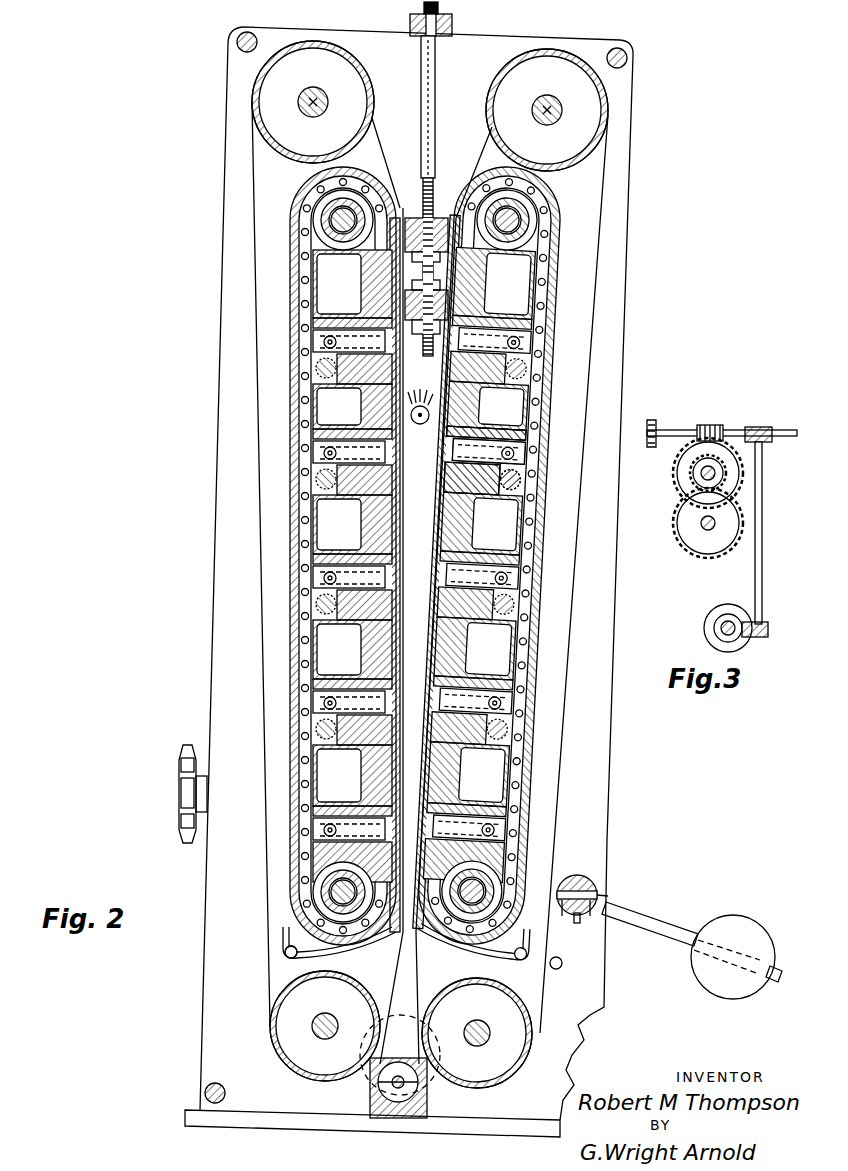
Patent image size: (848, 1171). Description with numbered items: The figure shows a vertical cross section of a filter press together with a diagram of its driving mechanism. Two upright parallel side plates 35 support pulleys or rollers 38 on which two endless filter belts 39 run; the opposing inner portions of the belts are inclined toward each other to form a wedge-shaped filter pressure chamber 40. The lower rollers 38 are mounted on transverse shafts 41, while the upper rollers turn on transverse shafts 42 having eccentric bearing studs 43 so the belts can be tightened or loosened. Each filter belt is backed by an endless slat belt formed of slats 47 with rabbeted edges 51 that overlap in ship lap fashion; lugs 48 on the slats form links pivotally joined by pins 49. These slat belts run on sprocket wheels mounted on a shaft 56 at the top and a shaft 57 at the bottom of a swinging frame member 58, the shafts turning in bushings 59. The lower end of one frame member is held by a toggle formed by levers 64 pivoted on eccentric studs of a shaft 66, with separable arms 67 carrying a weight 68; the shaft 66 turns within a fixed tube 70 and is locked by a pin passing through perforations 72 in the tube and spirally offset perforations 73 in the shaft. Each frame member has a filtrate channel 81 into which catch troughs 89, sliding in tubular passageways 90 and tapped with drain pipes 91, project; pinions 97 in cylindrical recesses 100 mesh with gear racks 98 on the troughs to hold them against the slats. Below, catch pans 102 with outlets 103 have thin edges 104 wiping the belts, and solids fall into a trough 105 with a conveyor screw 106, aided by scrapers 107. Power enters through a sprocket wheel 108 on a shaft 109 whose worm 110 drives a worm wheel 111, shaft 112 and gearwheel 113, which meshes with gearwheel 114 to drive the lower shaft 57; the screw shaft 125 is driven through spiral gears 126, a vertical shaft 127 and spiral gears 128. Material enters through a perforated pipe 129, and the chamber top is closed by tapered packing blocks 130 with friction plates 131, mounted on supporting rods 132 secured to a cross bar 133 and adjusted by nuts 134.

In FIG. 2, the side plates 35 is at (621, 270).
In FIG. 2, the pulleys or rollers 38 is at (362, 140).
In FIG. 2, the endless filter belts 39 is at (258, 684).
In FIG. 2, the filter pressure chamber 40 is at (418, 480).
In FIG. 2, the transverse shafts 41 is at (312, 1026).
In FIG. 2, the transverse shafts 42 is at (320, 98).
In FIG. 2, the eccentric bearing studs 43 is at (325, 98).
In FIG. 2, the slats 47 is at (560, 375).
In FIG. 2, the lugs 48 is at (352, 406).
In FIG. 2, the pins 49 is at (352, 524).
In FIG. 2, the rabbeted edges 51 is at (544, 476).
In FIG. 2, the shaft 56 is at (424, 283).
In FIG. 2, the shaft 57 is at (312, 890).
In FIG. 3, the shaft 57 is at (709, 532).
In FIG. 2, the swinging frame member 58 is at (366, 782).
In FIG. 2, the bushings 59 is at (366, 180).
In FIG. 2, the levers 64 is at (612, 905).
In FIG. 2, the shaft 66 is at (596, 888).
In FIG. 2, the separable arms 67 is at (672, 936).
In FIG. 2, the weight 68 is at (730, 922).
In FIG. 2, the fixed tube 70 is at (577, 924).
In FIG. 2, the perforations 72 is at (595, 917).
In FIG. 2, the perforations 73 is at (563, 914).
In FIG. 2, the filtrate channel 81 is at (384, 654).
In FIG. 2, the catch troughs 89 is at (492, 330).
In FIG. 2, the tubular passageways 90 is at (500, 340).
In FIG. 2, the outlet or drain pipes 91 is at (518, 320).
In FIG. 2, the pinions 97 is at (316, 370).
In FIG. 2, the gear racks 98 is at (340, 360).
In FIG. 2, the cylindrical recesses 100 is at (483, 523).
In FIG. 2, the catch pans 102 is at (282, 934).
In FIG. 2, the outlets 103 is at (284, 952).
In FIG. 2, the thin edges 104 is at (402, 998).
In FIG. 2, the trough 105 is at (398, 1062).
In FIG. 2, the conveyor screw 106 is at (372, 1092).
In FIG. 2, the scrapers 107 is at (398, 1032).
In FIG. 2, the sprocket wheel 108 is at (190, 746).
In FIG. 3, the sprocket wheel 108 is at (656, 420).
In FIG. 2, the shaft 109 is at (178, 796).
In FIG. 3, the shaft 109 is at (686, 422).
In FIG. 3, the worm 110 is at (712, 425).
In FIG. 3, the worm wheel 111 is at (676, 462).
In FIG. 3, the shaft 112 is at (702, 476).
In FIG. 3, the gearwheel 113 is at (695, 470).
In FIG. 3, the gearwheel 114 is at (682, 536).
In FIG. 3, the shaft 125 is at (722, 628).
In FIG. 3, the spiral gears 126 is at (740, 636).
In FIG. 3, the vertical shaft 127 is at (755, 598).
In FIG. 3, the spiral gears 128 is at (766, 432).
In FIG. 2, the pipe 129 is at (422, 418).
In FIG. 2, the packing blocks or plugs 130 is at (412, 210).
In FIG. 2, the friction plates 131 is at (446, 206).
In FIG. 2, the supporting rods 132 is at (436, 104).
In FIG. 2, the cross bar 133 is at (453, 38).
In FIG. 2, the nuts 134 is at (422, 10).